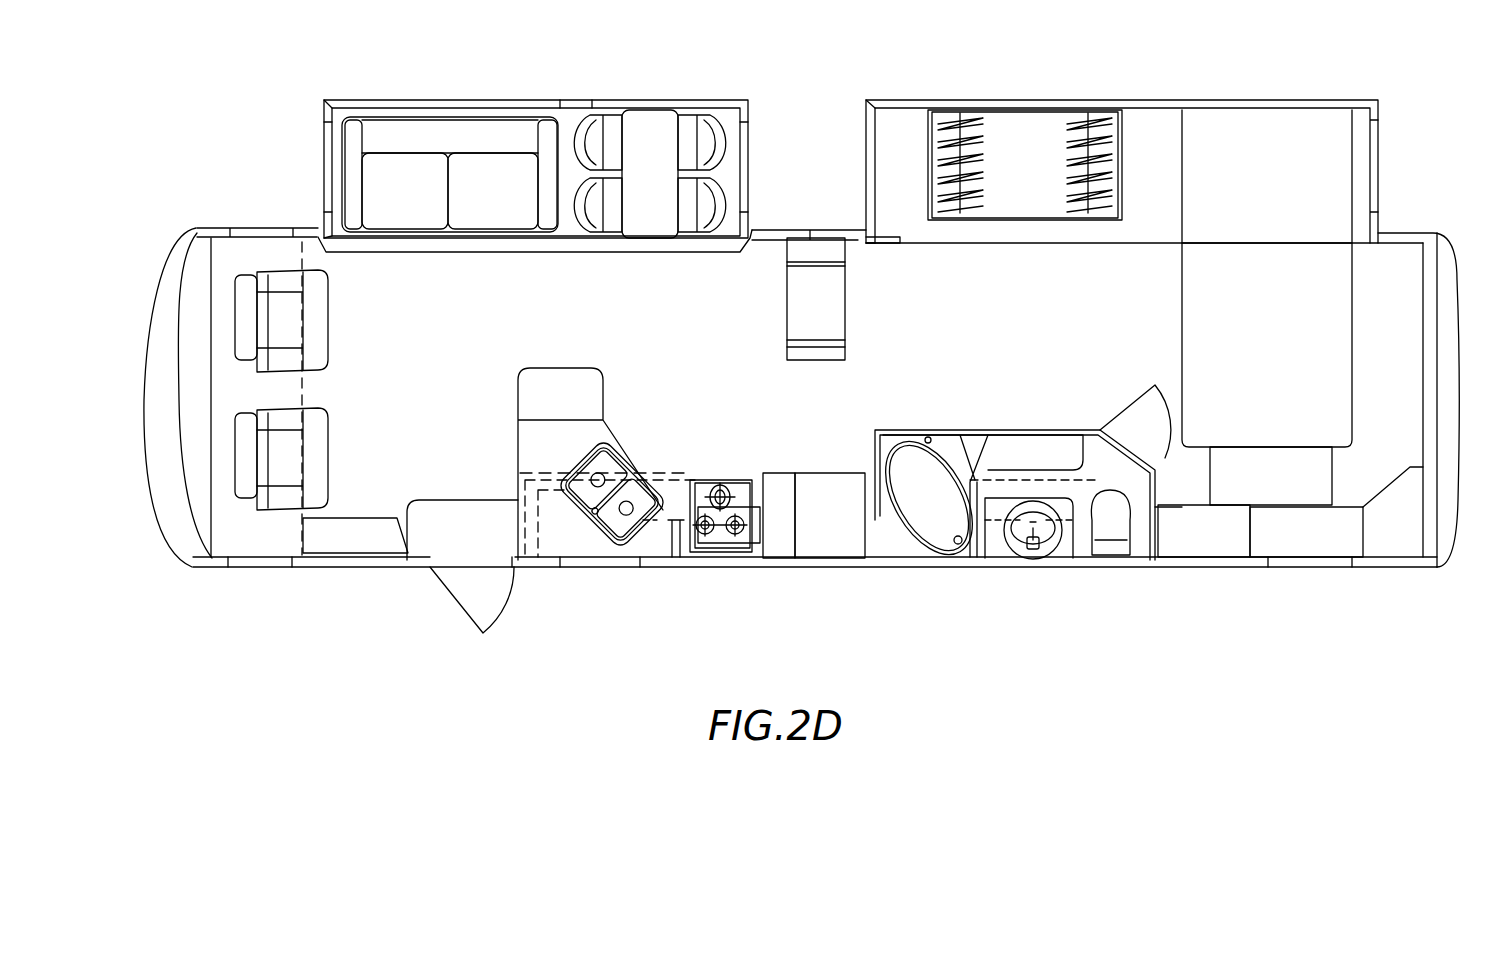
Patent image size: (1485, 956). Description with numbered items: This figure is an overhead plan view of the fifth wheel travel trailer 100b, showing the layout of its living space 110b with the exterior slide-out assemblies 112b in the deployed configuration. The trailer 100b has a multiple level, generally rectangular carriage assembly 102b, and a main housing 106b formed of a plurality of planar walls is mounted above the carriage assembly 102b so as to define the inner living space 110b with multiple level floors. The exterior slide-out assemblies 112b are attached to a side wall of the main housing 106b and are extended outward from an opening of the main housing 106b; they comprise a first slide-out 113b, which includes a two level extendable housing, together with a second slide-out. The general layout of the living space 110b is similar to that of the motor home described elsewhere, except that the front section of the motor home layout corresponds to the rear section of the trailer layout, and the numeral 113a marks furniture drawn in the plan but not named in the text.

The recreational vehicle 100b is at (1308, 570).
The carriage assembly 102b is at (563, 98).
The main housing 106b is at (223, 257).
The living space 110b is at (680, 435).
The exterior slide-out assemblies 112b is at (337, 113).
The sofa / dinette furniture 113a is at (397, 150).
The first slide-out 113b is at (1150, 167).